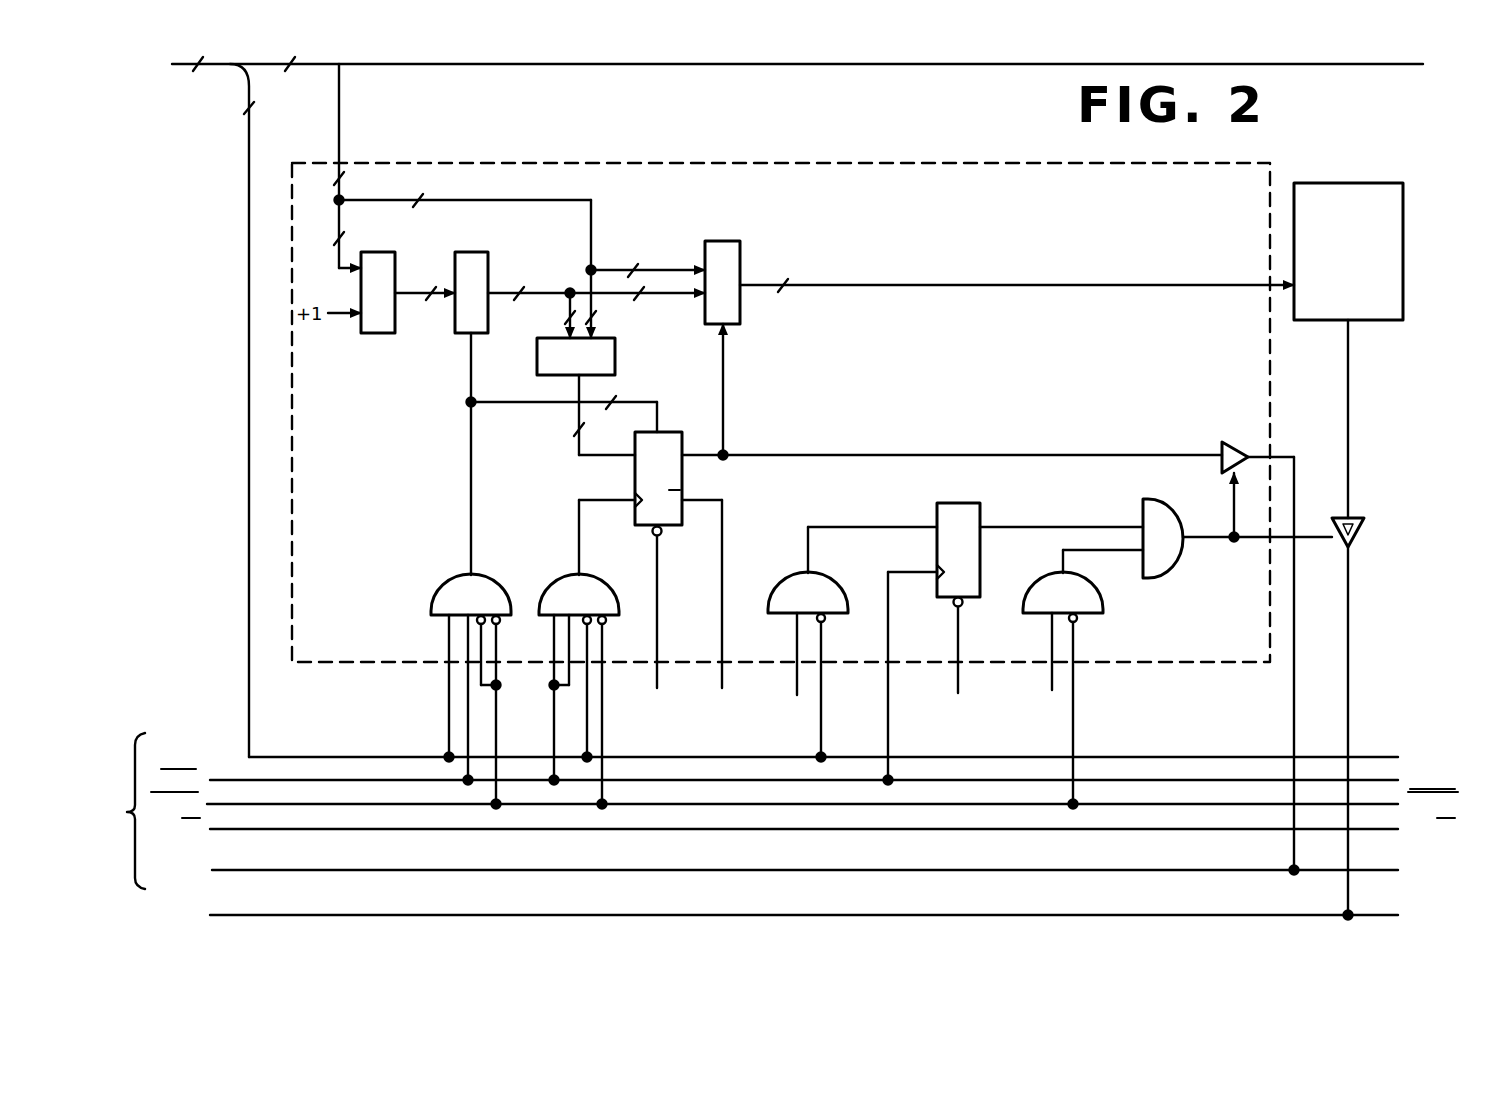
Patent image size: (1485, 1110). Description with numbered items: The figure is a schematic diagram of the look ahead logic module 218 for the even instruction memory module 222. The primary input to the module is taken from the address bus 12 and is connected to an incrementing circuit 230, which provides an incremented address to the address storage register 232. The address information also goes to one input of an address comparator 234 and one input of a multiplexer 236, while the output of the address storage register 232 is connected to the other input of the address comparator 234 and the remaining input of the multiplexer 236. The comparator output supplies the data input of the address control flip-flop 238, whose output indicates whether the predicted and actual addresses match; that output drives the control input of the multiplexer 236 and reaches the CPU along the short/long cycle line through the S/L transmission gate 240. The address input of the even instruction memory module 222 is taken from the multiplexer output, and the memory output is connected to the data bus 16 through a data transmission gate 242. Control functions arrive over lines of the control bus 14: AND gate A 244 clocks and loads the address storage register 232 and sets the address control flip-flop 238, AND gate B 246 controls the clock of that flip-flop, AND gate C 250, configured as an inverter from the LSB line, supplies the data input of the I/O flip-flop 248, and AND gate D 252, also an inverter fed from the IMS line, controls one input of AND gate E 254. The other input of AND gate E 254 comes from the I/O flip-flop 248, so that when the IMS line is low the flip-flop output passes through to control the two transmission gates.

The address bus 12 is at (492, 56).
The control bus 14 is at (781, 821).
The data bus 16 is at (743, 188).
The look ahead logic module 218 is at (292, 648).
The even instruction memory module 222 is at (1380, 320).
The incrementing circuit 230 is at (388, 333).
The address storage register 232 is at (486, 333).
The address comparator 234 is at (615, 360).
The multiplexer 236 is at (740, 310).
The address control flip-flop 238 is at (682, 480).
The S/L transmission gate 240 is at (1222, 451).
The data transmission gate 242 is at (1356, 545).
The AND gate A 244 is at (431, 600).
The AND gate B 246 is at (612, 592).
The I/O flip-flop 248 is at (980, 575).
The AND gate C 250 is at (845, 605).
The AND gate D 252 is at (1100, 603).
The AND gate E 254 is at (1170, 570).